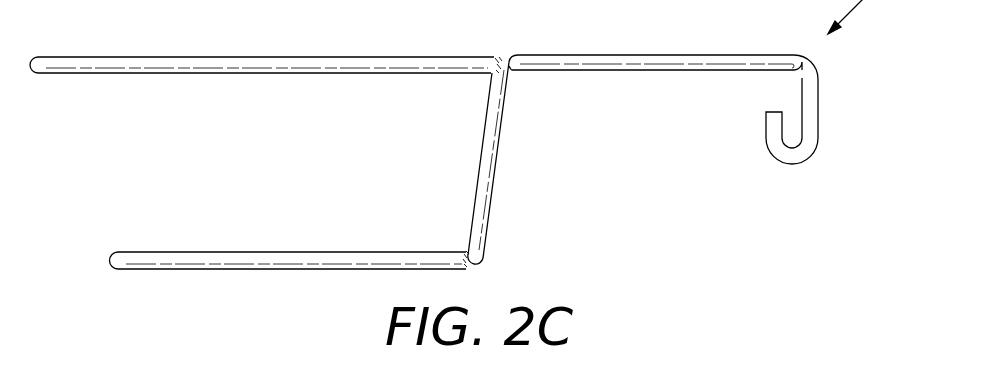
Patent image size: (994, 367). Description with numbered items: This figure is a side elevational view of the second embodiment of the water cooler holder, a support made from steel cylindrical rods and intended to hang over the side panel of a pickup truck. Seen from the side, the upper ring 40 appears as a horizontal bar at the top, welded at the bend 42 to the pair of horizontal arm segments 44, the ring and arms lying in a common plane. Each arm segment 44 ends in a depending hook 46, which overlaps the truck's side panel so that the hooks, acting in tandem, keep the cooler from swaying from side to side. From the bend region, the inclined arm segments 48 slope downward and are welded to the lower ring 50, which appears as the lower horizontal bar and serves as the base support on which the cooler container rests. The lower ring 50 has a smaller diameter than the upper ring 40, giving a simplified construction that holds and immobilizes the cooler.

The upper ring 40 is at (177, 73).
The bend 42 is at (513, 73).
The horizontal arm segments 44 is at (676, 57).
The depending hook 46 is at (773, 147).
The inclined arm segments 48 is at (486, 140).
The lower ring 50 is at (373, 252).